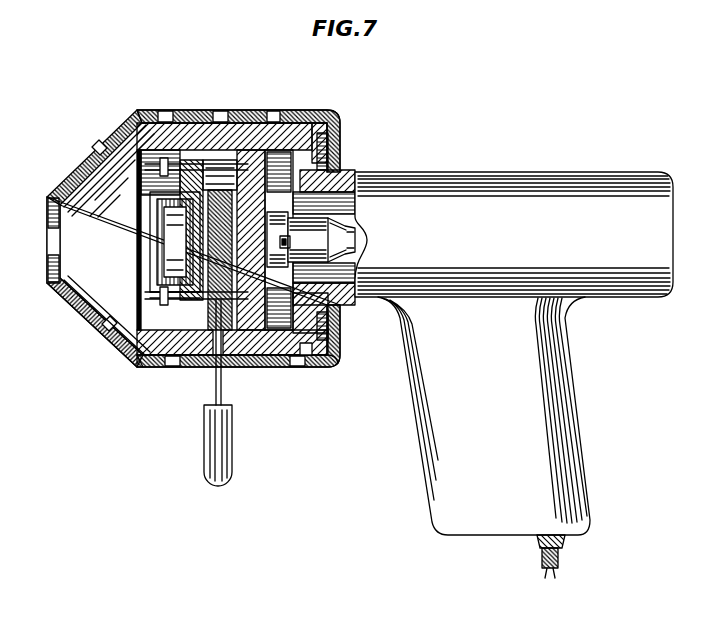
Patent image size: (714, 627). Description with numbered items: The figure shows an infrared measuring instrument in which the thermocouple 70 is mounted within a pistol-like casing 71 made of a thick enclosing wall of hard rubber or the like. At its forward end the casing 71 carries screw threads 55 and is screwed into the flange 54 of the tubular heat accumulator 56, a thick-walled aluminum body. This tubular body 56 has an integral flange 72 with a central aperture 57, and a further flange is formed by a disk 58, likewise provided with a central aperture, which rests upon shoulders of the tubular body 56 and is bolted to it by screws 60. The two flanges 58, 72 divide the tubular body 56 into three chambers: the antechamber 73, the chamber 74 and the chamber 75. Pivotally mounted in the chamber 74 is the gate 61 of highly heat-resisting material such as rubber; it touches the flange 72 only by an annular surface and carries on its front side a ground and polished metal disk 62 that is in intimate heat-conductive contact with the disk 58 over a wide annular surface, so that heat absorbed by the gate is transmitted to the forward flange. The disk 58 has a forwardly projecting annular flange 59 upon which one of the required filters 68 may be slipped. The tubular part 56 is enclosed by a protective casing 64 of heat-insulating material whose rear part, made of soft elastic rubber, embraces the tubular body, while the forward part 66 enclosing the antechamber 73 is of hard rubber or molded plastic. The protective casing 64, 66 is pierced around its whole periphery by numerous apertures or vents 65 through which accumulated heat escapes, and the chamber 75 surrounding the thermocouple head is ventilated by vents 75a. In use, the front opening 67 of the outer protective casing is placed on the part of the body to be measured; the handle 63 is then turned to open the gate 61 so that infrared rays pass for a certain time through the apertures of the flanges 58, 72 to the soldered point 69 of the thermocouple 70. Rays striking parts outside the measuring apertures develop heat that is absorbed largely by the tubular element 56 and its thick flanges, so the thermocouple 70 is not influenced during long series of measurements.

The flange 54 is at (341, 293).
The screw threads 55 is at (335, 183).
The tubular heat accumulator 56 is at (322, 365).
The central aperture 57 is at (262, 290).
The disk 58 is at (195, 368).
The annular flange 59 is at (152, 290).
The screws 60 is at (142, 366).
The gate 61 is at (234, 250).
The metal disk 62 is at (163, 235).
The handle 63 is at (223, 402).
The protective casing 64 is at (328, 112).
The apertures or vents 65 is at (283, 111).
The forward part 66 is at (76, 168).
The front opening 67 is at (52, 258).
The filters 68 is at (157, 252).
The soldered point 69 is at (286, 241).
The thermocouple 70 is at (350, 240).
The casing 71 is at (487, 172).
The flange 72 is at (246, 190).
The antechamber 73 is at (78, 288).
The chamber 74 is at (226, 185).
The chamber 75 is at (293, 350).
The vents 75a is at (328, 150).